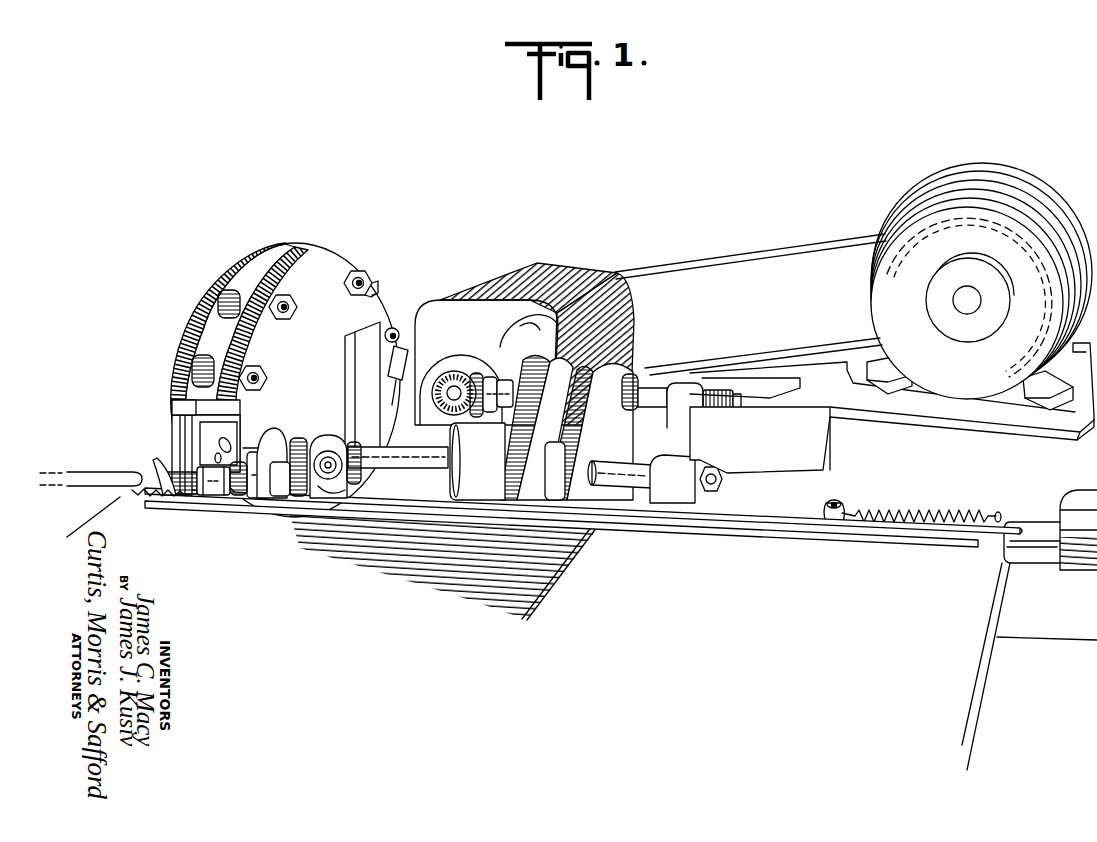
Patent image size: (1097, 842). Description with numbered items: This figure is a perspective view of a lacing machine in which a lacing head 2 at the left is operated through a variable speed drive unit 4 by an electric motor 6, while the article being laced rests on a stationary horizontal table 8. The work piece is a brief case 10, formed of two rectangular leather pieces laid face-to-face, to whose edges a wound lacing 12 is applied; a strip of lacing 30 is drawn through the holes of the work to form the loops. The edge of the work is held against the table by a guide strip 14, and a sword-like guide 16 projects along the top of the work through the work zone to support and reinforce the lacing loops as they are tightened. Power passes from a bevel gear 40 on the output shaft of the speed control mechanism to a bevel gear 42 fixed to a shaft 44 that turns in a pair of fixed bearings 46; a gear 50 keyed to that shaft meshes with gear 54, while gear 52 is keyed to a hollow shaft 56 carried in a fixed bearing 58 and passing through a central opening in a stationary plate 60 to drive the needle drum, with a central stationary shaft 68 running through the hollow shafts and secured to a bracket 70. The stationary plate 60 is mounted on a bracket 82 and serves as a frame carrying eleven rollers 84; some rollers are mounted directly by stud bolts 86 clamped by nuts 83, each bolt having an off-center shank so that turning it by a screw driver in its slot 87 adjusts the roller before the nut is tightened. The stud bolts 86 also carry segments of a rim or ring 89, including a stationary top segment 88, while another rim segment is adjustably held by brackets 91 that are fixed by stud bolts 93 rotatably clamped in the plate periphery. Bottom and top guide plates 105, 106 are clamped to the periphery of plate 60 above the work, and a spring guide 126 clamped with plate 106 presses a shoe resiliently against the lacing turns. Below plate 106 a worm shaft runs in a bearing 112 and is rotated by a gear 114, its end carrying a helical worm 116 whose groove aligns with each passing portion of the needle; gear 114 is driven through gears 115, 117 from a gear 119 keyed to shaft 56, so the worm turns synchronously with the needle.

The lacing head 2 is at (248, 217).
The variable speed drive unit 4 is at (524, 322).
The electric motor 6 is at (1043, 190).
The stationary horizontal table 8 is at (963, 677).
The brief case 10 is at (523, 598).
The wound lacing 12 is at (143, 505).
The guide strip 14 is at (396, 513).
The sword-like guide 16 is at (271, 503).
The strip of lacing 30 is at (200, 437).
The bevel gear 40 is at (456, 370).
The bevel gear 42 is at (478, 371).
The shaft 44 is at (740, 408).
The fixed bearings 46 is at (685, 392).
The gear 50 is at (634, 380).
The gear 52 is at (528, 330).
The gear 54 is at (602, 386).
The hollow shaft 56 is at (382, 448).
The fixed bearing 58 is at (490, 440).
The stationary plate 60 is at (325, 262).
The central stationary shaft 68 is at (636, 486).
The bracket 70 is at (680, 478).
The bracket 82 is at (366, 340).
The nuts 83 is at (287, 298).
The rollers 84 is at (284, 252).
The stud bolts 86 is at (328, 305).
The slot 87 is at (380, 285).
The stationary top segment 88 is at (188, 331).
The rim or ring 89 is at (221, 338).
The brackets 91 is at (398, 364).
The stud bolts 93 is at (395, 328).
The bottom guide plate 105 is at (160, 466).
The top guide plate 106 is at (236, 424).
The bearing 112 is at (222, 504).
The gear 114 is at (236, 500).
The gear 115 is at (302, 432).
The helical worm 116 is at (208, 498).
The gear 117 is at (282, 432).
The gear 119 is at (330, 436).
The spring guide 126 is at (190, 406).